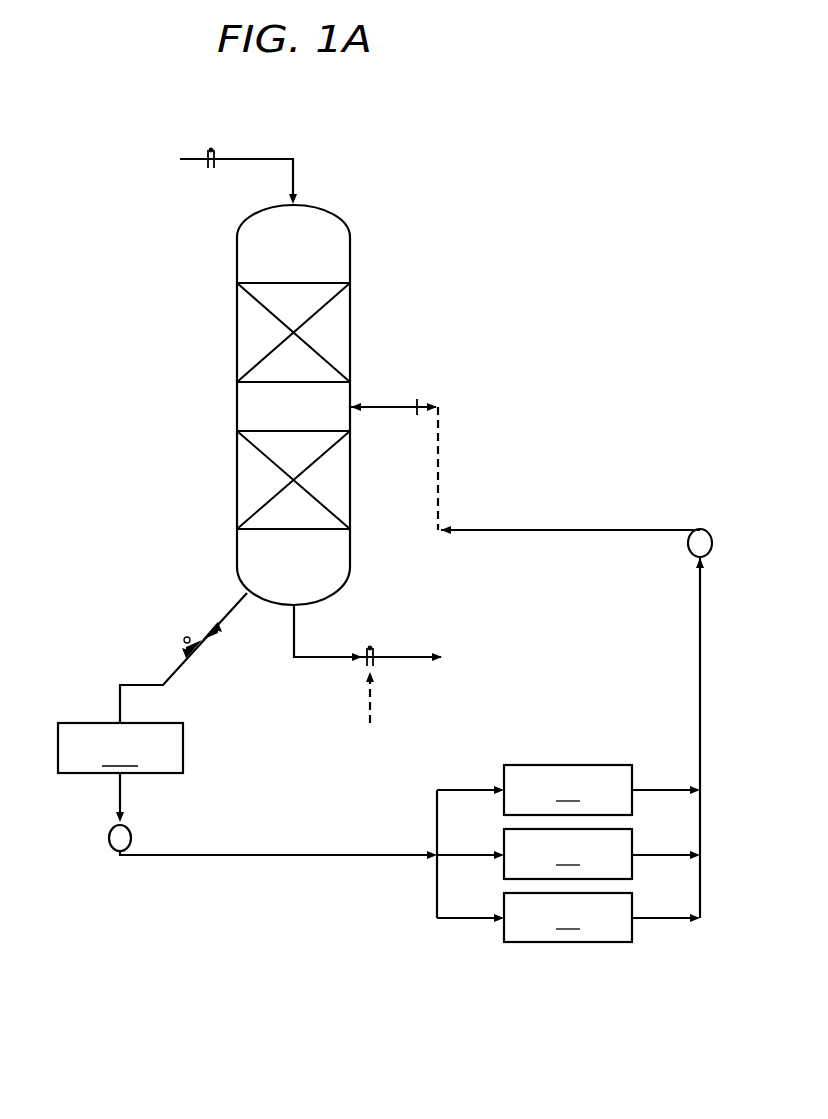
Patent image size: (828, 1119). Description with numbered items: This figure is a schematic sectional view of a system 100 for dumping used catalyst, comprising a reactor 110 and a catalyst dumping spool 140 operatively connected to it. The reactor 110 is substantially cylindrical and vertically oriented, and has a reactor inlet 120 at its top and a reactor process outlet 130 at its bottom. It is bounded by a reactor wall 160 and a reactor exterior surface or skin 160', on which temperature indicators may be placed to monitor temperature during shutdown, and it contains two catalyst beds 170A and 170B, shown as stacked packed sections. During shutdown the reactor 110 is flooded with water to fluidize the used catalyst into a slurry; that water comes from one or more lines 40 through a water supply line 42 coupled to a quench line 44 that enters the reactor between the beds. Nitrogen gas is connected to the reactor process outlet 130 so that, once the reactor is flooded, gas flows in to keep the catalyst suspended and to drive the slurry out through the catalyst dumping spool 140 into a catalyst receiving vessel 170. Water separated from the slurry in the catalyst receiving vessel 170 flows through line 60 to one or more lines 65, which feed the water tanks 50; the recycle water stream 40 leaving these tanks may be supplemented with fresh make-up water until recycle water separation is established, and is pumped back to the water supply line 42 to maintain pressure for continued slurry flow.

The system 100 is at (140, 323).
The reactor 110 is at (344, 225).
The reactor inlet 120 is at (181, 159).
The reactor process outlet 130 is at (296, 636).
The catalyst dumping spool 140 is at (176, 624).
The reactor wall 160 is at (209, 406).
The reactor exterior surface or skin 160' is at (198, 258).
The catalyst bed 170A is at (238, 328).
The catalyst bed 170B is at (240, 476).
The catalyst receiving vessel 170 is at (120, 748).
The quench line 44 is at (385, 407).
The water supply line 42 is at (550, 530).
The lines 40 is at (657, 790).
The water tanks 50 is at (568, 853).
The line 60 is at (114, 800).
The lines 65 is at (462, 790).